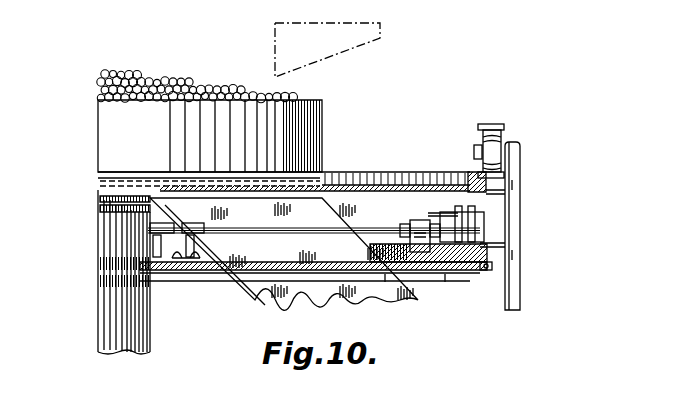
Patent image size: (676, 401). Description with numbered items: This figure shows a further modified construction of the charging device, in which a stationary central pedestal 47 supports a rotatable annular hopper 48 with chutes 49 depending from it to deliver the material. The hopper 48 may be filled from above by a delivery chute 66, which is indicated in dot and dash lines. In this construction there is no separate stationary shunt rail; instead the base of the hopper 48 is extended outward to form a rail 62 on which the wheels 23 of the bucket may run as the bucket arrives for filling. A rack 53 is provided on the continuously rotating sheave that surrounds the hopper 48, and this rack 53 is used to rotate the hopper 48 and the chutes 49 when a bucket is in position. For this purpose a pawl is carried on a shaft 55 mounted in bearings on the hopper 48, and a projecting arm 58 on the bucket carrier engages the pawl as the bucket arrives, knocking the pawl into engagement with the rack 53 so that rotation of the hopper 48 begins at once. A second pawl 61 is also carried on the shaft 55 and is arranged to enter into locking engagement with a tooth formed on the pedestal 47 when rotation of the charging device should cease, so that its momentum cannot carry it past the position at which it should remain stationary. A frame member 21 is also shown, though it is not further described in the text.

The delivery chute 66 is at (282, 46).
The annular hopper 48 is at (300, 114).
The rail 62 is at (478, 186).
The wheels 23 is at (492, 165).
The frame 21 is at (514, 300).
The projecting arm 58 is at (488, 270).
The shaft 55 is at (264, 224).
The chutes 49 is at (366, 292).
The rack 53 is at (172, 258).
The central pedestal 47 is at (138, 320).
The second pawl 61 is at (115, 240).